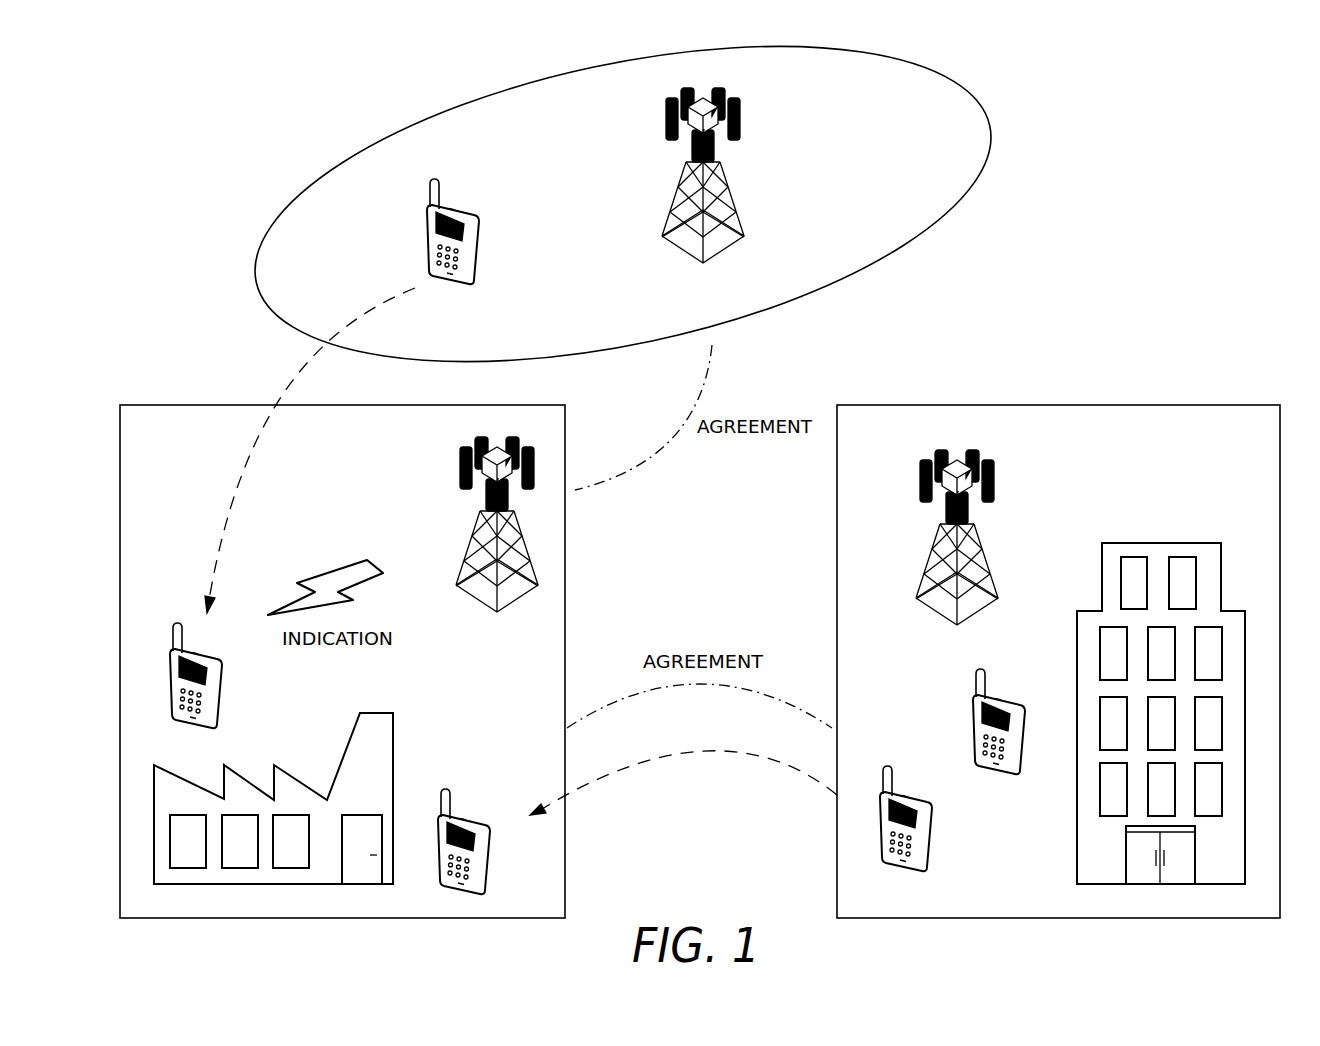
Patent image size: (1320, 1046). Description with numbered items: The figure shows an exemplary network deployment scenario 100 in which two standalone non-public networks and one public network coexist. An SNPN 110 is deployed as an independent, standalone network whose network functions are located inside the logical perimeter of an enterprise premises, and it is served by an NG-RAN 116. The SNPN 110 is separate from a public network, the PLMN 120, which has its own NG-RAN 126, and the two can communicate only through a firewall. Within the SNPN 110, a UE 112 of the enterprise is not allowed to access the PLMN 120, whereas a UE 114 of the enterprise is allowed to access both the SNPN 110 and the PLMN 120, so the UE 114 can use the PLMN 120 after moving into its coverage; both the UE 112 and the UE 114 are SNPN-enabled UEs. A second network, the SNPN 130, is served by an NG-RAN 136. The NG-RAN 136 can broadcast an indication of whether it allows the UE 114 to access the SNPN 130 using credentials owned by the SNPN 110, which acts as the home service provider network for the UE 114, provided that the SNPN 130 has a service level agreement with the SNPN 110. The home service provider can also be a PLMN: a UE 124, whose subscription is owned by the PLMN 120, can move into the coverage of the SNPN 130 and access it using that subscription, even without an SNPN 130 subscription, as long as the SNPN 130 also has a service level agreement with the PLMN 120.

The network deployment scenario 100 is at (1154, 128).
The SNPN 110 is at (1248, 466).
The UE 112 is at (973, 707).
The UE 114 is at (492, 840).
The NG-RAN 116 is at (978, 453).
The PLMN 120 is at (851, 137).
The UE 124 is at (483, 218).
The NG-RAN 126 is at (668, 112).
The SNPN 130 is at (191, 466).
The NG-RAN 136 is at (462, 455).